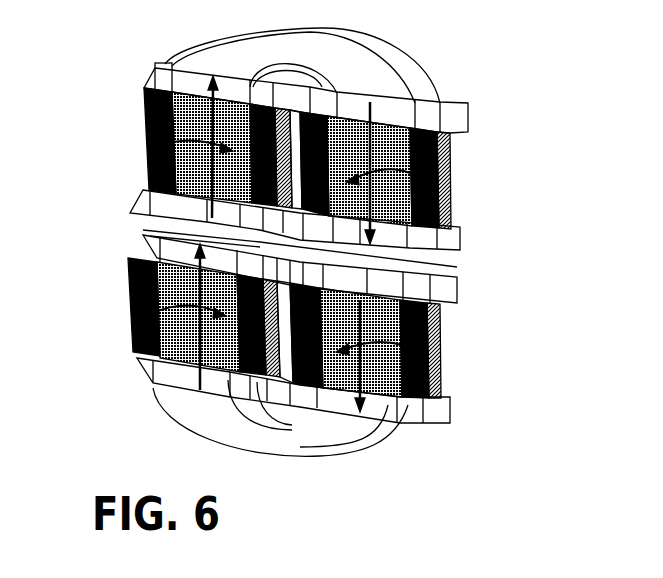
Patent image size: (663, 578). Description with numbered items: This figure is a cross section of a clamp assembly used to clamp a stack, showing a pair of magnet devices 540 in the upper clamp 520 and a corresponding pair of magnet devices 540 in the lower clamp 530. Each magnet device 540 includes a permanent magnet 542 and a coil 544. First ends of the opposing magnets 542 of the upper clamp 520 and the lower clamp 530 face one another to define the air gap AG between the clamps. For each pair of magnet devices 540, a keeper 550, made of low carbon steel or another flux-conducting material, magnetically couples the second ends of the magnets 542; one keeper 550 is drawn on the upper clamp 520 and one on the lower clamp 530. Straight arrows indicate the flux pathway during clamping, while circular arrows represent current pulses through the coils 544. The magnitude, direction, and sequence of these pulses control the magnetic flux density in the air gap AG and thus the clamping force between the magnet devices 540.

The upper clamp 520 is at (476, 111).
The lower clamp 530 is at (458, 411).
The magnet device 540 is at (249, 160).
The permanent magnet 542 is at (190, 173).
The coil 544 is at (140, 147).
The keeper 550 is at (412, 63).
The air gap AG is at (457, 267).